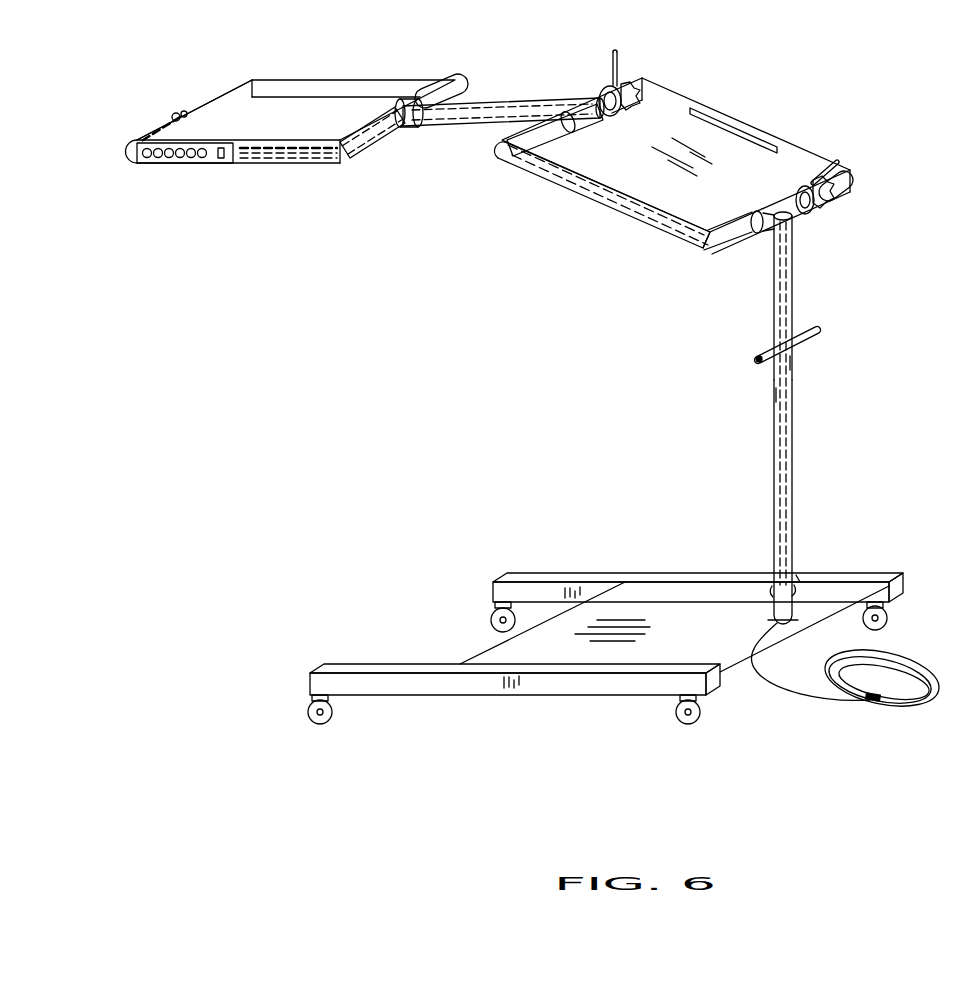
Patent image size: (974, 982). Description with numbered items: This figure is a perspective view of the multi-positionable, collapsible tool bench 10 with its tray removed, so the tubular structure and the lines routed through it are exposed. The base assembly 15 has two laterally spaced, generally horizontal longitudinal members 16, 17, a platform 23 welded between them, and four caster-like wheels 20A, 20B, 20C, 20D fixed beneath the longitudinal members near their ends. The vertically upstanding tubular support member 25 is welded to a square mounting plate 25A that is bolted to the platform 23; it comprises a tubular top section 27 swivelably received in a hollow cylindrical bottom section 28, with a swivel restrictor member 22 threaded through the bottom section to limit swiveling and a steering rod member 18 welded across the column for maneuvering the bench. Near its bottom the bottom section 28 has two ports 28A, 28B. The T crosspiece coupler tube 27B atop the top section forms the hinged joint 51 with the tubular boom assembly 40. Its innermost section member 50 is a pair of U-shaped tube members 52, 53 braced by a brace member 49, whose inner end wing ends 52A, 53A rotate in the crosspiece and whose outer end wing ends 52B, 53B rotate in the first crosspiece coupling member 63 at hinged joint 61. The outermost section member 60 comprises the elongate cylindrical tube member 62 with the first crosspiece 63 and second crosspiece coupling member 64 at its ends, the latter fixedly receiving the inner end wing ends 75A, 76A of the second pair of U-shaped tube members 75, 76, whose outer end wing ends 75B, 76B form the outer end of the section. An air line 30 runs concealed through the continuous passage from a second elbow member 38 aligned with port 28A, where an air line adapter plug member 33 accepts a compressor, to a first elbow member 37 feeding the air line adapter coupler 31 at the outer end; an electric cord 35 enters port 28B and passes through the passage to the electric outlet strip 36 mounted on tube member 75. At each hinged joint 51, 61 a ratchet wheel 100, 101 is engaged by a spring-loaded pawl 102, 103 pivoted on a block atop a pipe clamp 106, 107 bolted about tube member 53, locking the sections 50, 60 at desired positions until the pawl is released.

The tool bench 10 is at (400, 296).
The base assembly 15 is at (495, 710).
The longitudinal member 16 is at (432, 697).
The longitudinal member 17 is at (643, 573).
The steering rod member 18 is at (818, 330).
The caster-like wheel 20A is at (315, 726).
The caster-like wheel 20B is at (690, 725).
The caster-like wheel 20C is at (490, 621).
The caster-like wheel 20D is at (888, 618).
The swivel restrictor member 22 is at (797, 421).
The platform 23 is at (587, 655).
The support member 25 is at (684, 429).
The mounting plate 25A is at (766, 622).
The top section 27 is at (774, 250).
The T crosspiece coupler tube 27B is at (778, 209).
The bottom section 28 is at (773, 470).
The port 28A is at (794, 587).
The port 28B is at (772, 591).
The air line 30 is at (792, 364).
The air line adapter coupler 31 is at (172, 114).
The air line adapter plug member 33 is at (803, 591).
The electric cord 35 is at (775, 395).
The electric outlet strip 36 is at (192, 165).
The first elbow member 37 is at (800, 574).
The second elbow member 38 is at (184, 108).
The boom assembly 40 is at (750, 50).
The brace member 49 is at (734, 150).
The innermost section member 50 is at (574, 233).
The hinged joint 51 is at (750, 220).
The U-shaped tube member 52 is at (540, 168).
The inner end wing end 52A is at (722, 256).
The outer end wing end 52B is at (518, 141).
The U-shaped tube member 53 is at (789, 146).
The inner end wing end 53A is at (836, 197).
The outer end wing end 53B is at (646, 103).
The outermost section member 60 is at (395, 52).
The hinged joint 61 is at (558, 140).
The cylindrical tube member 62 is at (447, 126).
The first crosspiece coupling member 63 is at (597, 100).
The second crosspiece coupling member 64 is at (395, 110).
The U-shaped tube member 75 is at (300, 160).
The inner end wing end 75A is at (355, 152).
The outer end wing end 75B is at (133, 141).
The U-shaped tube member 76 is at (332, 80).
The inner end wing end 76A is at (466, 90).
The outer end wing end 76B is at (223, 92).
The ratchet wheel 100 is at (816, 215).
The ratchet wheel 101 is at (607, 83).
The spring-loaded pawl 102 is at (839, 162).
The spring-loaded pawl 103 is at (620, 55).
The pipe clamp 106 is at (834, 211).
The pipe clamp 107 is at (646, 81).